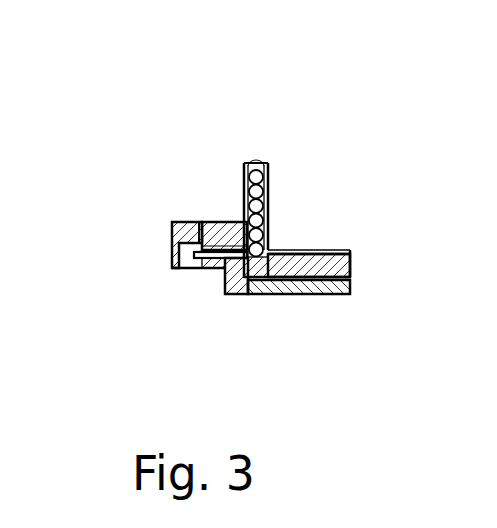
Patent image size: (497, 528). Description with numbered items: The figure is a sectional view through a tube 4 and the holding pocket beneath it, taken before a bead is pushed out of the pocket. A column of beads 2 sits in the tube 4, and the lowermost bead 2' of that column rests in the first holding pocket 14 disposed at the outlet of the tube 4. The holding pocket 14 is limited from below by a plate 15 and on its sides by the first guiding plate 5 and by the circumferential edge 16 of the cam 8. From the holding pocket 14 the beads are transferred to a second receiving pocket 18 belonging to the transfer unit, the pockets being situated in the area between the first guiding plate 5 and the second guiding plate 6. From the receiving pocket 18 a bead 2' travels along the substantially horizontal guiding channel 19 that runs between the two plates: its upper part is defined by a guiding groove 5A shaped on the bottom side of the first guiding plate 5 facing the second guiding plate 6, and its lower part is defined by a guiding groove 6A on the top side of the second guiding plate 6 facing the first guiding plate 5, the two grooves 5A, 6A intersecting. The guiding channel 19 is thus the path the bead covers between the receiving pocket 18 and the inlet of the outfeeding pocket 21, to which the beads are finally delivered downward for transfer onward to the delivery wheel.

The bead 2 is at (294, 129).
The lowermost bead 2' is at (311, 189).
The tube 4 is at (245, 165).
The first guiding plate 5 is at (230, 225).
The guiding groove 5A is at (201, 222).
The second guiding plate 6 is at (172, 233).
The guiding groove 6A is at (203, 262).
The cam 8 is at (350, 252).
The first holding pocket 14 is at (282, 288).
The plate 15 is at (350, 258).
The circumferential edge 16 is at (278, 251).
The second receiving pocket 18 is at (230, 259).
The guiding channel 19 is at (221, 265).
The outfeeding pocket 21 is at (194, 257).